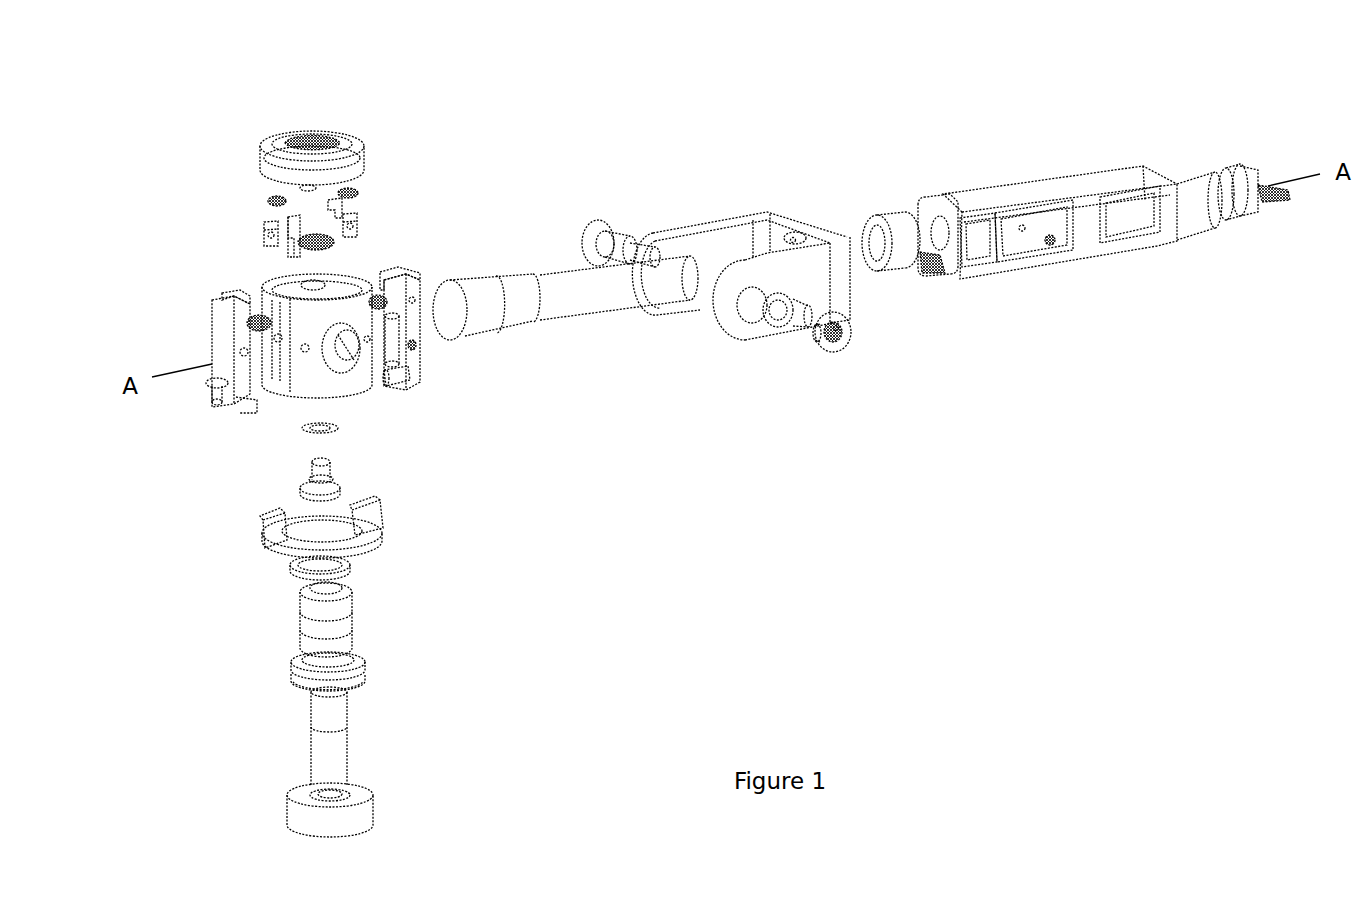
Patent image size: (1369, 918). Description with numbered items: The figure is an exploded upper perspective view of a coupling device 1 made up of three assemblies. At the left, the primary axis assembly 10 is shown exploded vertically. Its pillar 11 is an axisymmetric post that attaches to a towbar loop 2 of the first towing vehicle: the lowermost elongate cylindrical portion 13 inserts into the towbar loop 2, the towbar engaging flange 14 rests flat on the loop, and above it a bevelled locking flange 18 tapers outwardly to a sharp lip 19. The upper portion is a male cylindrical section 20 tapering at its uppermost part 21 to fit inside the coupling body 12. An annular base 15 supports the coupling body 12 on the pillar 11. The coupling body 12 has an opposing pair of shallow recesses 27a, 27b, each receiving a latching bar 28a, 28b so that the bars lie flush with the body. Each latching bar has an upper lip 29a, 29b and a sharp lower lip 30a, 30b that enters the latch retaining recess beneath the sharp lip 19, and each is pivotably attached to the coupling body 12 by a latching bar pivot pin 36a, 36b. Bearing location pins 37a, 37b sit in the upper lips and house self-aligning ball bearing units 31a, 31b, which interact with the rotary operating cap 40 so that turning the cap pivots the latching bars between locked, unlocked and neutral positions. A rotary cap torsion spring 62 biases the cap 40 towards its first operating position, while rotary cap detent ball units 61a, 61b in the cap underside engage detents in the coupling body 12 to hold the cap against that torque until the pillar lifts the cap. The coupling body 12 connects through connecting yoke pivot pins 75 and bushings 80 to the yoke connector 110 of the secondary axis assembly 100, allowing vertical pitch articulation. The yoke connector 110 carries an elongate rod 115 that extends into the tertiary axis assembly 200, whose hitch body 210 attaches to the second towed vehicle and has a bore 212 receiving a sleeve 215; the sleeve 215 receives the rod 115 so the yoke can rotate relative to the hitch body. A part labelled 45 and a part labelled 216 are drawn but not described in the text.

The coupling device 1 is at (926, 606).
The primary axis assembly 10 is at (293, 110).
The rotary operating cap 40 is at (318, 140).
The self-aligning ball bearing unit 31a is at (268, 190).
The self-aligning ball bearing unit 31b is at (360, 188).
The rotary cap detent ball unit 61a is at (290, 220).
The rotary cap detent ball unit 61b is at (340, 209).
The bearing location pin 37a is at (268, 222).
The bearing location pin 37b is at (350, 225).
The rotary cap torsion spring 62 is at (336, 242).
The shallow recess 27a is at (270, 293).
The shallow recess 27b is at (340, 283).
The upper lip 29a is at (222, 293).
The upper lip 29b is at (396, 275).
The latching bar 28a is at (222, 350).
The latching bar 28b is at (420, 344).
The lower lip 30a is at (250, 404).
The lower lip 30b is at (402, 375).
The latching bar pivot pin 36a is at (355, 368).
The latching bar pivot pin 36b is at (412, 356).
The coupling body 12 is at (303, 396).
The screw 45 is at (340, 492).
The annular base 15 is at (378, 538).
The uppermost part 21 is at (305, 590).
The male cylindrical section 20 is at (305, 634).
The bevelled locking flange 18 is at (296, 660).
The sharp lip 19 is at (333, 673).
The towbar engaging flange 14 is at (335, 714).
The pillar 11 is at (350, 745).
The elongate cylindrical portion 13 is at (312, 725).
The towbar loop 2 is at (378, 802).
The secondary axis assembly 100 is at (760, 468).
The elongate rod 115 is at (560, 316).
The yoke connector 110 is at (757, 345).
The bushing 80 is at (760, 322).
The connecting yoke pivot pin 75 is at (607, 222).
The tertiary axis assembly 200 is at (1086, 440).
The sleeve 215 is at (897, 270).
The bore 212 is at (955, 265).
The hitch body 210 is at (1087, 264).
The collar 216 is at (1195, 222).